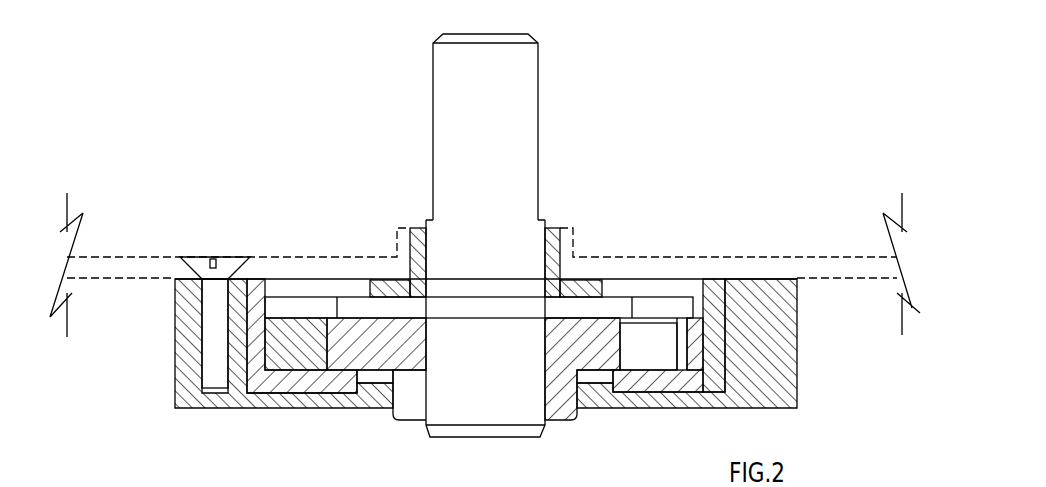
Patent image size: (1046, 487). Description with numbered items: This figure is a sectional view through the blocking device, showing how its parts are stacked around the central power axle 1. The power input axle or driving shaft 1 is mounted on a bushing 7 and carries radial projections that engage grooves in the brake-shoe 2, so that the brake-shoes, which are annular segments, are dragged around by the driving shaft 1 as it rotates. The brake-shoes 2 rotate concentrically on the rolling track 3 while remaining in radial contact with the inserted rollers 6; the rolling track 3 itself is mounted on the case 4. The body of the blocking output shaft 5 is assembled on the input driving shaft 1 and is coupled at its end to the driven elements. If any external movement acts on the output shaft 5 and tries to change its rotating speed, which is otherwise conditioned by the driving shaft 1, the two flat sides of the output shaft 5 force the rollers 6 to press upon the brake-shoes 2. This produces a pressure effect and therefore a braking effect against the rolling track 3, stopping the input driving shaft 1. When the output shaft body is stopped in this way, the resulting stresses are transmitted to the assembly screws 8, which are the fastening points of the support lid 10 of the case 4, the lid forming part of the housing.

The power axle 1 is at (515, 155).
The brake-shoe 2 is at (303, 333).
The rolling track 3 is at (265, 297).
The case 4 is at (777, 347).
The blocking output shaft 5 is at (367, 343).
The rollers 6 is at (650, 340).
The bushings 7 is at (560, 252).
The assembly screws 8 is at (217, 297).
The support lid 10 is at (733, 258).